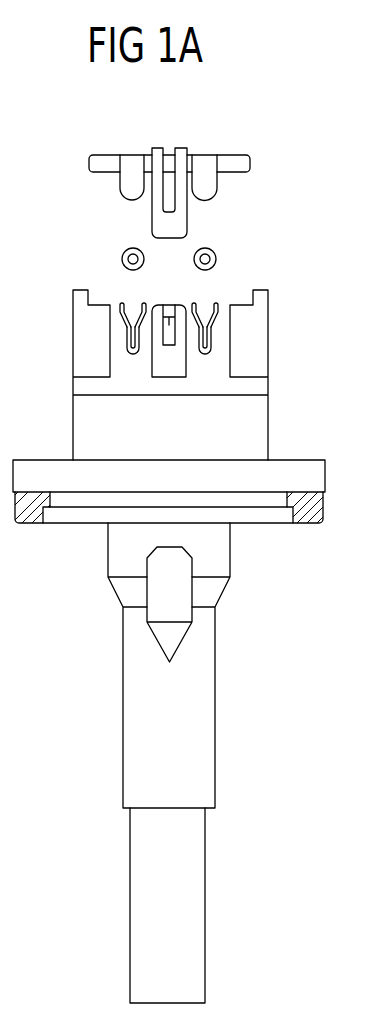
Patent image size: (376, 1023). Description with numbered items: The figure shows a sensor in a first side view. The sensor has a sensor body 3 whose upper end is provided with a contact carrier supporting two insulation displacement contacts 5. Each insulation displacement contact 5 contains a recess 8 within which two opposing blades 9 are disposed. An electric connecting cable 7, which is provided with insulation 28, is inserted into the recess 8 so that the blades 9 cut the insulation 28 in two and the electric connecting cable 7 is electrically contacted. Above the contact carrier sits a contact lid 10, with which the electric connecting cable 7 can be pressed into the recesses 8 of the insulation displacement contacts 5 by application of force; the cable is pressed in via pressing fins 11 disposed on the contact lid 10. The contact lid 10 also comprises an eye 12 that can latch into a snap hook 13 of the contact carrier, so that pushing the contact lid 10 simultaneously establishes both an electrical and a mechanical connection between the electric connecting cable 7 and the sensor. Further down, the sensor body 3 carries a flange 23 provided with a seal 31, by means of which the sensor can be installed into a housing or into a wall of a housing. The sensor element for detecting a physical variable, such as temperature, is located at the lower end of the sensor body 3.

The sensor body 3 is at (218, 553).
The insulation displacement contact 5 is at (127, 300).
The electric connecting cable 7 is at (207, 260).
The recess 8 is at (132, 352).
The blade 9 is at (128, 330).
The contact lid 10 is at (233, 160).
The pressing fin 11 is at (121, 187).
The eye 12 is at (156, 217).
The snap hook 13 is at (170, 330).
The flange 23 is at (297, 468).
The insulation 28 is at (207, 259).
The seal 31 is at (22, 525).